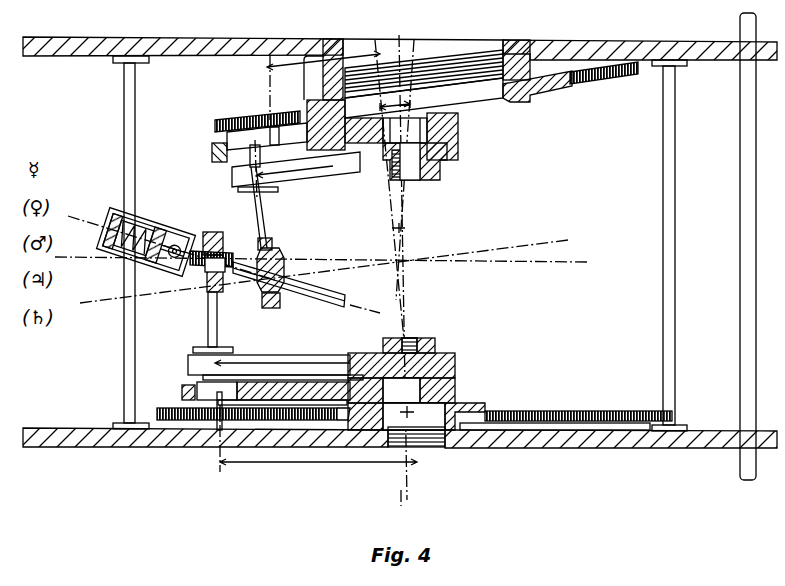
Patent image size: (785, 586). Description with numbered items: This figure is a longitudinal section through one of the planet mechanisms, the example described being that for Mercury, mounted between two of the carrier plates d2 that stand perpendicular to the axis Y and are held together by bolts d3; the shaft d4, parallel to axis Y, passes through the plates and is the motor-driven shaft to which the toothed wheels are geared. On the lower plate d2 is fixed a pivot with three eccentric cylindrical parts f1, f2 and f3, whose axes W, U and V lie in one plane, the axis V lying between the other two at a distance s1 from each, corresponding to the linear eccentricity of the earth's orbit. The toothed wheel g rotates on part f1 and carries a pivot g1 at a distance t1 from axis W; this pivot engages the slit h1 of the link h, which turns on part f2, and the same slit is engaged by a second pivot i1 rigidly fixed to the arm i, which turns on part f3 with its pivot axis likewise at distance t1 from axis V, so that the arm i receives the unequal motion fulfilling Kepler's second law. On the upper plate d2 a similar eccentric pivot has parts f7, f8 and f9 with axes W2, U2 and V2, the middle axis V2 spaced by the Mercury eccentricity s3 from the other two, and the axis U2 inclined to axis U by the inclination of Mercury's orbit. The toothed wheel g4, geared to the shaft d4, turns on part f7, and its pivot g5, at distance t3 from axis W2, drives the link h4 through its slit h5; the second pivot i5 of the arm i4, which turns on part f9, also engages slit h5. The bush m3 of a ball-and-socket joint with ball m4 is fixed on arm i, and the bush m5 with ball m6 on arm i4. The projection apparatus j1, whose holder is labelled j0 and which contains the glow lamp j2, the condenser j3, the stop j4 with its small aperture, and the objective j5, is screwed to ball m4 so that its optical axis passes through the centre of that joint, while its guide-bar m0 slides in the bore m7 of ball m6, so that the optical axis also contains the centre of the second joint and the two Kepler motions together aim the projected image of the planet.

The plate d2 is at (592, 40).
The bolt d3 is at (124, 378).
The shaft d4 is at (740, 267).
The axis of pivot part f7 W2 is at (466, 128).
The axis of pivot part f8 U2 is at (374, 46).
The axis of pivot part f9 V2 is at (398, 42).
The arm i is at (406, 230).
The distance t3 is at (318, 114).
The distance s3 is at (380, 104).
The pivot part f8 is at (364, 131).
The pivot part f9 is at (450, 162).
The pivot part f7 is at (535, 99).
The toothed wheel g4 is at (606, 82).
The pivot g5 is at (268, 118).
The slit h5 is at (229, 135).
The link h4 is at (213, 151).
The pivot i5 is at (250, 162).
The arm i4 is at (299, 176).
The housing of planet mechanism j0 is at (125, 263).
The objective j5 is at (108, 238).
The projection apparatus j1 is at (113, 206).
The stop j4 is at (148, 214).
The glow lamp j2 is at (180, 231).
The condenser j3 is at (173, 266).
The bush m3 is at (214, 232).
The ball m4 is at (207, 290).
The bush m5 is at (260, 253).
The bore m7 is at (284, 262).
The ball m6 is at (260, 296).
The guide-bar m0 is at (315, 298).
The slit h1 is at (232, 365).
The distance t1 is at (316, 411).
The pivot i1 is at (203, 378).
The link h is at (273, 384).
The toothed wheel g is at (622, 410).
The pivot g1 is at (214, 410).
The pivot part f3 is at (436, 346).
The axis of pivot part f3 V is at (454, 362).
The pivot part f2 is at (455, 385).
The axis of pivot part f2 U is at (372, 352).
The pivot part f1 is at (470, 405).
The axis of pivot part f1 W is at (421, 456).
The axis of rotation Y is at (400, 508).
The distance s1 is at (395, 446).